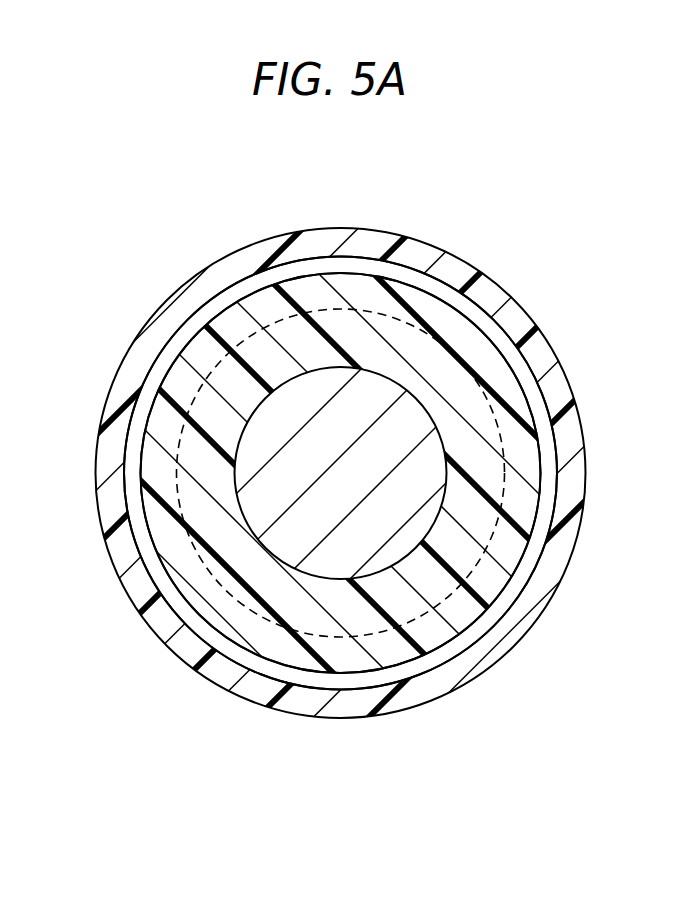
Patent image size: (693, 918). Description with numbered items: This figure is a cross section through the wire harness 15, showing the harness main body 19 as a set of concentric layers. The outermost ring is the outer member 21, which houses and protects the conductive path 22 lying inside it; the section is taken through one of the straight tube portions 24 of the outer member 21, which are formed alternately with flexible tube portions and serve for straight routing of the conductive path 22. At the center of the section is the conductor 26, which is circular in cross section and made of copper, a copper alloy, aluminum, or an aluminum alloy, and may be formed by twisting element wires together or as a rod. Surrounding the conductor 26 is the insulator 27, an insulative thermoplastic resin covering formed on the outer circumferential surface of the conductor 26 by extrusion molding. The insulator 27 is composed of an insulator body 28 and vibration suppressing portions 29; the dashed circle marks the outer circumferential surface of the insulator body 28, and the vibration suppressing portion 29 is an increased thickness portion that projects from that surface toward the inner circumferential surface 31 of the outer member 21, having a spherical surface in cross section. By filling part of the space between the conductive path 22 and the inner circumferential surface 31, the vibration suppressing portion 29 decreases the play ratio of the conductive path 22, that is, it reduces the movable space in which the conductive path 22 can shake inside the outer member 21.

The wire harness 15 is at (346, 459).
The harness main body 19 is at (346, 459).
The outer member 21 is at (422, 244).
The conductive path 22 is at (468, 316).
The straight tube portion 24 is at (220, 672).
The conductor 26 is at (357, 538).
The insulator 27 is at (477, 525).
The insulator body 28 is at (494, 413).
The vibration suppressing portion 29 is at (542, 458).
The inner circumferential surface 31 is at (383, 682).